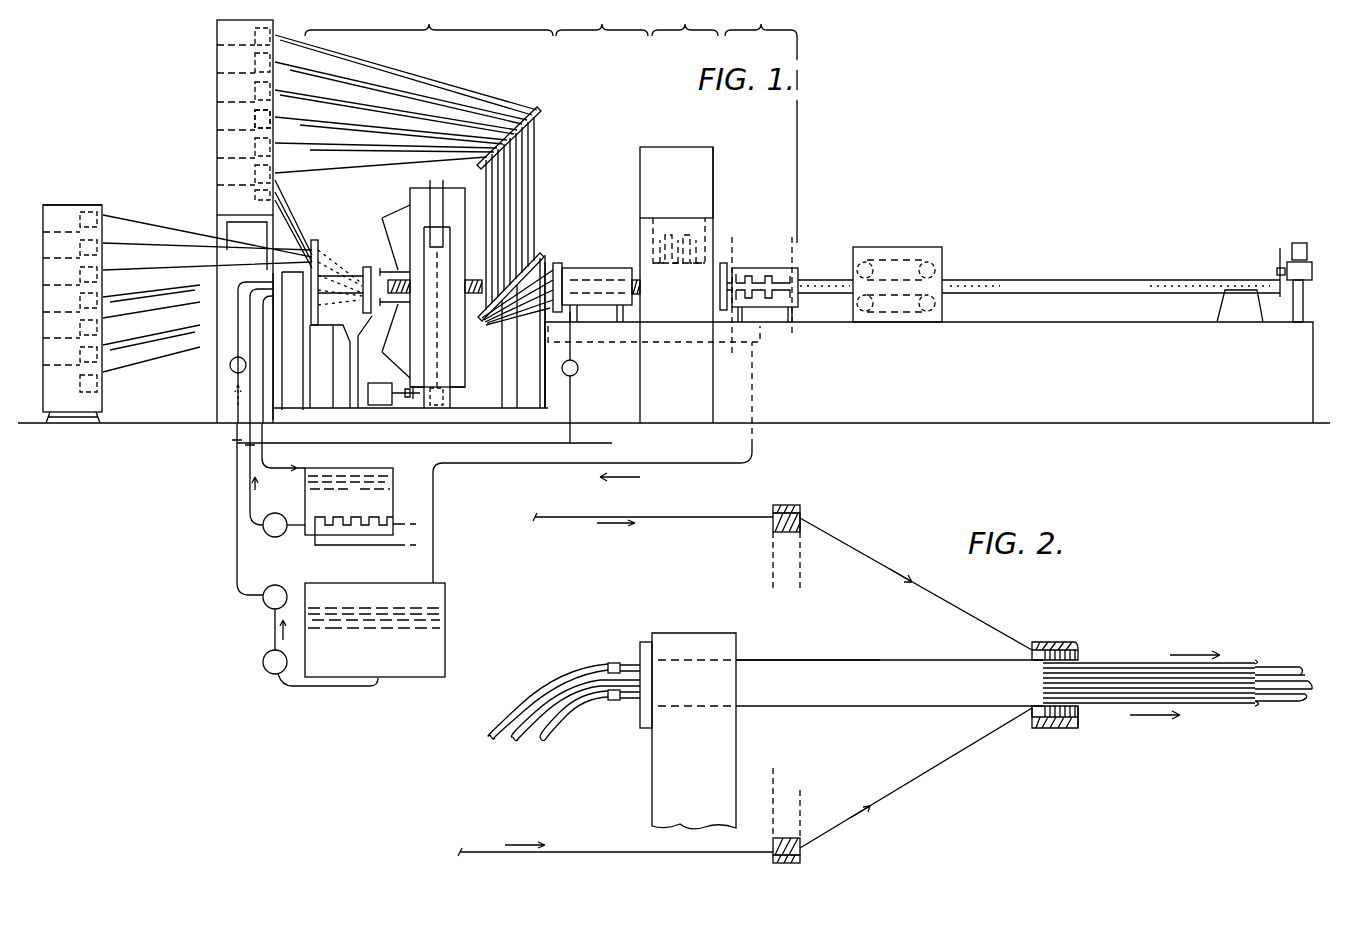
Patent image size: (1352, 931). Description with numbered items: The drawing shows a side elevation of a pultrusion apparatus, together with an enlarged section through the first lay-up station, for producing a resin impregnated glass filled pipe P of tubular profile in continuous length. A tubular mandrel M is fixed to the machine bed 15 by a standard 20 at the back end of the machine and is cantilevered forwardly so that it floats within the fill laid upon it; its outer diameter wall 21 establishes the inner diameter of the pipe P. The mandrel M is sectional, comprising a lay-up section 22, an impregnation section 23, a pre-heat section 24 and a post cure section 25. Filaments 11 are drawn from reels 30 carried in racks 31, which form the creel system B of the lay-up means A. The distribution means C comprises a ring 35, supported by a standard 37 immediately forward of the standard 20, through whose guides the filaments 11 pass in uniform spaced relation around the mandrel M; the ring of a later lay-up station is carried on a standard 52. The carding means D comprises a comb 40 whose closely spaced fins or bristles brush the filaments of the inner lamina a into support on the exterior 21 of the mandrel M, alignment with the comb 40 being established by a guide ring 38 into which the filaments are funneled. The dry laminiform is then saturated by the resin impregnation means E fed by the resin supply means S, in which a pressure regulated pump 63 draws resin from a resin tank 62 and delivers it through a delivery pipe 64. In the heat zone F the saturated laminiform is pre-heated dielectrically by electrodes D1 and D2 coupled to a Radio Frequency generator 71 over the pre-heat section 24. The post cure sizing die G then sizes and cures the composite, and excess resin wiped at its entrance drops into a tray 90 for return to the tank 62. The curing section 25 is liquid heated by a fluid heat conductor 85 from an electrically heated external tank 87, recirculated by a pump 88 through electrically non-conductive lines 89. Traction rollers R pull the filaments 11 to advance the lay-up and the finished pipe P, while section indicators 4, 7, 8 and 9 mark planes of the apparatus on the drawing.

In FIG. 1, the filaments 11 is at (350, 50).
In FIG. 2, the filaments 11 is at (655, 540).
In FIG. 1, the bed 15 is at (1000, 397).
In FIG. 2, the standard 20 is at (660, 773).
In FIG. 2, the outer diameter wall 21 is at (930, 660).
In FIG. 1, the lay-up section 22 is at (429, 20).
In FIG. 1, the impregnation section 23 is at (602, 20).
In FIG. 1, the pre-heat section 24 is at (685, 20).
In FIG. 1, the post cure section 25 is at (761, 123).
In FIG. 1, the reels 30 is at (255, 120).
In FIG. 1, the racks 31 is at (217, 150).
In FIG. 2, the ring 35 is at (772, 522).
In FIG. 1, the standard 37 is at (345, 375).
In FIG. 2, the guide ring 38 is at (1032, 712).
In FIG. 2, the comb 40 is at (1078, 714).
In FIG. 1, the standard 52 is at (538, 318).
In FIG. 1, the resin tank 62 is at (447, 624).
In FIG. 1, the pressure regulated pump 63 is at (262, 670).
In FIG. 1, the delivery pipe 64 is at (205, 560).
In FIG. 2, the delivery pipe 64 is at (585, 712).
In FIG. 1, the Radio Frequency generator 71 is at (676, 285).
In FIG. 1, the fluid heat conductor 85 is at (364, 500).
In FIG. 1, the external tank 87 is at (393, 500).
In FIG. 1, the pump 88 is at (268, 538).
In FIG. 1, the lines 89 is at (262, 470).
In FIG. 1, the tray 90 is at (762, 342).
In FIG. 1, the lay-up means A is at (322, 232).
In FIG. 2, the lay-up means A is at (1207, 602).
In FIG. 1, the creel system B is at (207, 86).
In FIG. 1, the distribution means C is at (313, 355).
In FIG. 2, the distribution means C is at (812, 512).
In FIG. 1, the carding means D is at (373, 320).
In FIG. 2, the carding means D is at (1092, 645).
In FIG. 1, the mandrel M is at (348, 274).
In FIG. 2, the mandrel M is at (879, 651).
In FIG. 1, the heat zone F is at (725, 193).
In FIG. 1, the post cure sizing die G is at (771, 261).
In FIG. 1, the traction rollers R is at (923, 256).
In FIG. 1, the pipe P is at (1133, 280).
In FIG. 1, the resin supply means S is at (248, 636).
In FIG. 2, the inner lamina a is at (1128, 672).
In FIG. 1, the resin impregnation means E is at (600, 305).
In FIG. 1, the electrode D1 is at (691, 258).
In FIG. 1, the electrode D2 is at (695, 308).
In FIG. 1, the section line 4 is at (372, 208).
In FIG. 2, the section line 7 is at (771, 452).
In FIG. 2, the section line 8 is at (1035, 640).
In FIG. 2, the section line 9 is at (1062, 615).